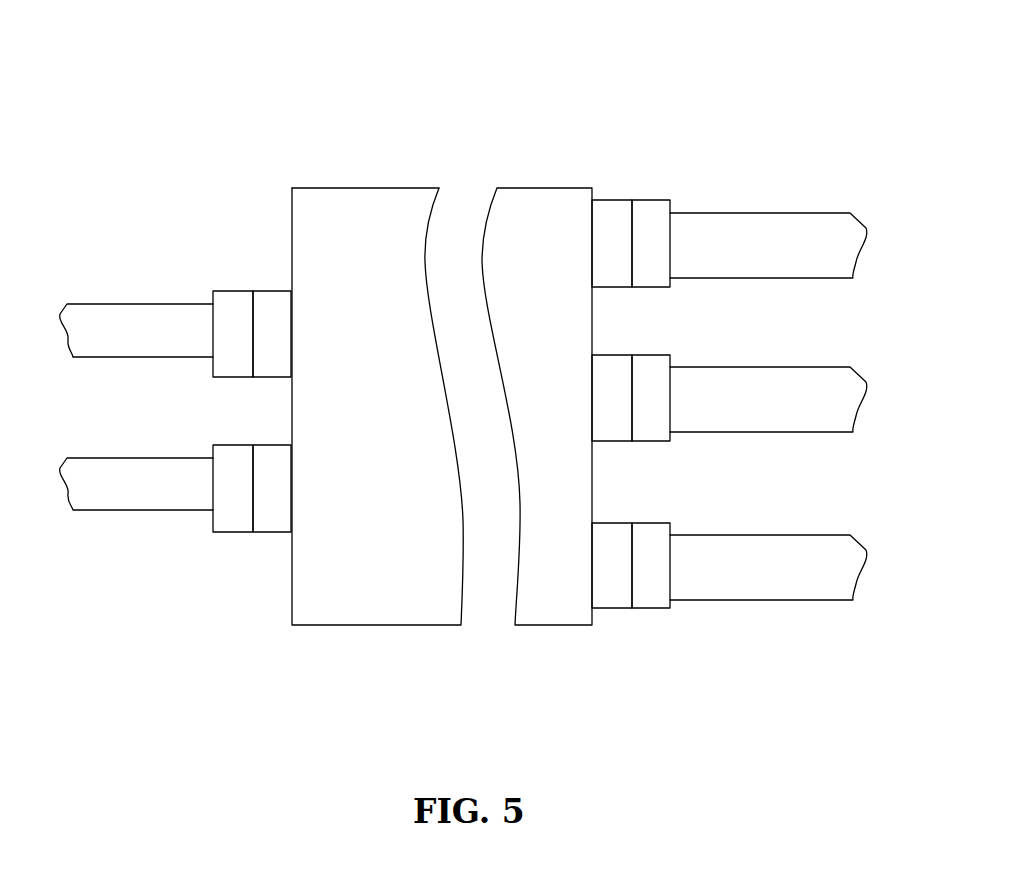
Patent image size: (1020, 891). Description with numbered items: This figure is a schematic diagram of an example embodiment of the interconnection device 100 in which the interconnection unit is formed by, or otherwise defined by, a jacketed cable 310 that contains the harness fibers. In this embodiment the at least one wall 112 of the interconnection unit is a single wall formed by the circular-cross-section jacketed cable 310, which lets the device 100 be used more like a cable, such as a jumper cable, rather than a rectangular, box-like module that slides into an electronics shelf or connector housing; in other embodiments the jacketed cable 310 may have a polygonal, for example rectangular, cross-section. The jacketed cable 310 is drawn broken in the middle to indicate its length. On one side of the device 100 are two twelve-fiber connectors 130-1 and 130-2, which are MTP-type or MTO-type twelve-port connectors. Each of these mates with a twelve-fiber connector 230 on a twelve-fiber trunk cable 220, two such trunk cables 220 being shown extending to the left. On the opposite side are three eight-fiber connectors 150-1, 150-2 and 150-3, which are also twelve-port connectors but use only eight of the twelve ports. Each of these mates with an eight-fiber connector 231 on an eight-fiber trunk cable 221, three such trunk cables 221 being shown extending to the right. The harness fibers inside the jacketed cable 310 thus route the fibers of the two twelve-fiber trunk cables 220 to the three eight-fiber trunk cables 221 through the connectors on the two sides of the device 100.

The interconnection device 100 is at (618, 665).
The jacketed cable 310 is at (361, 176).
The wall 112 is at (306, 188).
The 12f connector 130-1 is at (270, 291).
The 12f connector 130-2 is at (280, 445).
The 12-f connector 230 is at (227, 291).
The 12-f trunk cable 220 is at (158, 345).
The 8f connector 150-1 is at (629, 174).
The 8f connector 150-2 is at (620, 355).
The 8f connector 150-3 is at (620, 624).
The 8-f connector 231 is at (667, 200).
The 8-f trunk cable 221 is at (786, 268).